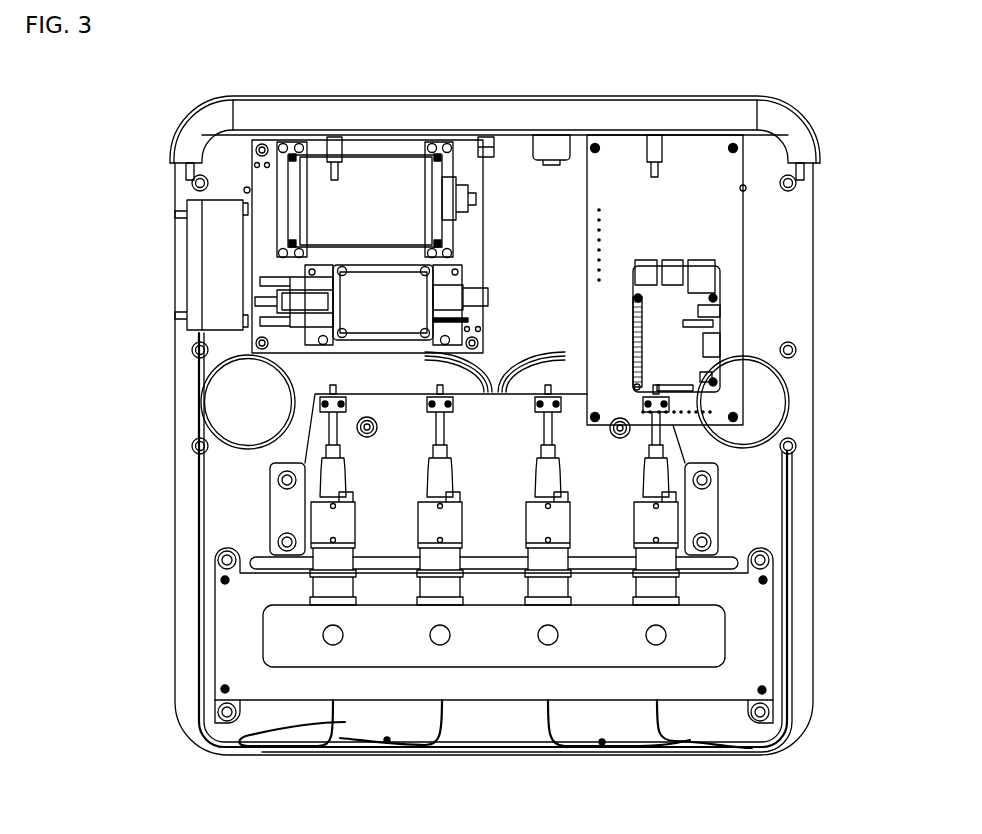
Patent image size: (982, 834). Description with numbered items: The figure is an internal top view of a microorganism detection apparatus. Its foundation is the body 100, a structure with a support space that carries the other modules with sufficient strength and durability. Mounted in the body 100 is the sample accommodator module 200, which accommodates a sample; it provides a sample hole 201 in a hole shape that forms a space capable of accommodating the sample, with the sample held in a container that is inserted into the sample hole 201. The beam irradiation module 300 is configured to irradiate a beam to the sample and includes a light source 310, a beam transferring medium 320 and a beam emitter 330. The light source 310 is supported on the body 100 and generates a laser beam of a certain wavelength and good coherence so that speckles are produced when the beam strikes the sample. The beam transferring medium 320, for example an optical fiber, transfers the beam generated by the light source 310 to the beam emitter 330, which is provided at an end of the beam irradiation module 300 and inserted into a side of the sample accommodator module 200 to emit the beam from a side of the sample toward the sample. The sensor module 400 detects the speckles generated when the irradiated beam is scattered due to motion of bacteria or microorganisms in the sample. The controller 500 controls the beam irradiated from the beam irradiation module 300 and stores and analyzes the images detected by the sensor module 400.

The body 100 is at (813, 415).
The sample accommodator module 200 is at (556, 680).
The sample hole 201 is at (657, 645).
The beam irradiation module 300 is at (88, 247).
The light source 310 is at (333, 207).
The beam transferring medium 320 is at (200, 398).
The beam emitter 330 is at (333, 720).
The sensor module 400 is at (670, 523).
The controller 500 is at (677, 353).